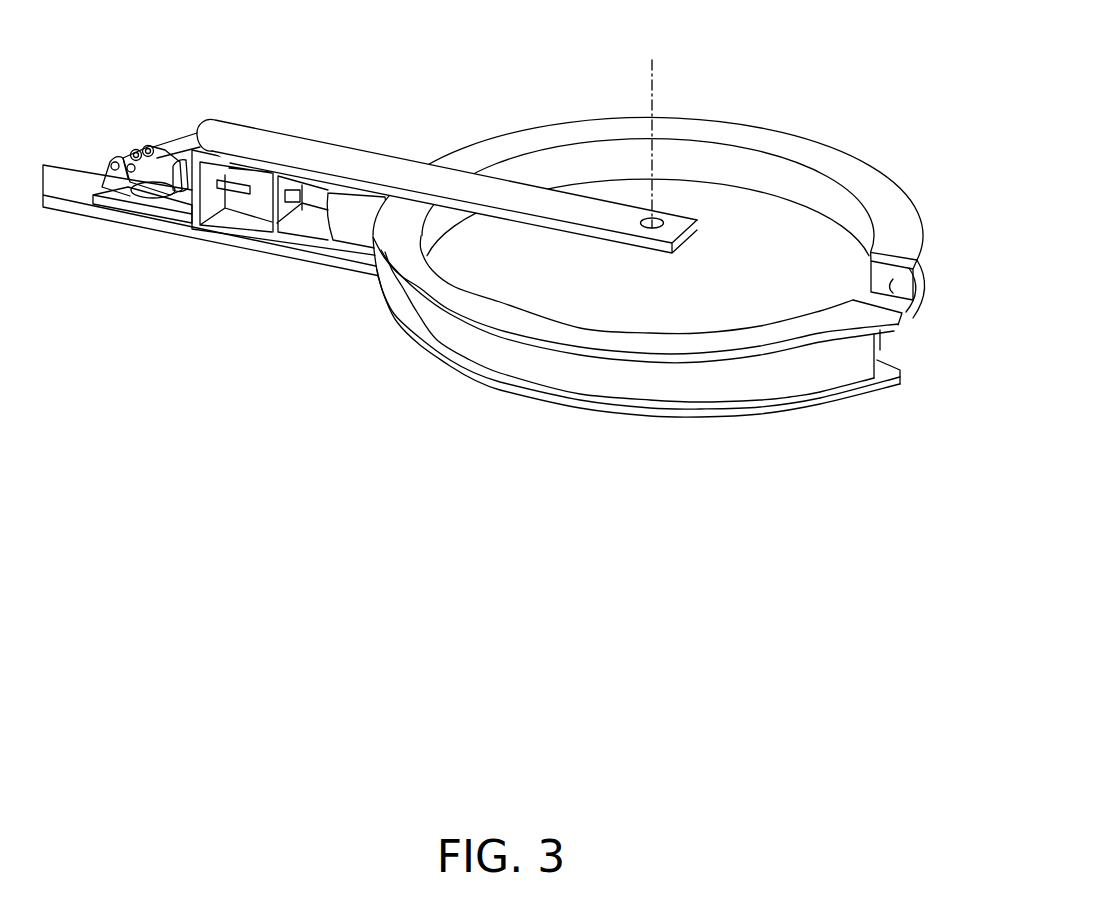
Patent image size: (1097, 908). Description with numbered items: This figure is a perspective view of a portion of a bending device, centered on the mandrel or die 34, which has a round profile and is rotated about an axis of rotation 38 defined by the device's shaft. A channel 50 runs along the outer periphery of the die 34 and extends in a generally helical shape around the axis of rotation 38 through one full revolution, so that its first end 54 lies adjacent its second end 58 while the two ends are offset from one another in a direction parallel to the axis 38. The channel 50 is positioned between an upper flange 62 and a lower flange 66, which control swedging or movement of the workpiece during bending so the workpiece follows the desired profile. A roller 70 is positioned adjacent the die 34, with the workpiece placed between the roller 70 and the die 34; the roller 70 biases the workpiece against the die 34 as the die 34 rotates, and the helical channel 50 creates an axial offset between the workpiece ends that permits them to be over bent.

The die 34 is at (668, 289).
The axis of rotation 38 is at (653, 110).
The channel 50 is at (668, 382).
The first end 54 is at (880, 351).
The second end 58 is at (923, 290).
The upper flange 62 is at (811, 338).
The lower flange 66 is at (790, 397).
The roller 70 is at (358, 228).